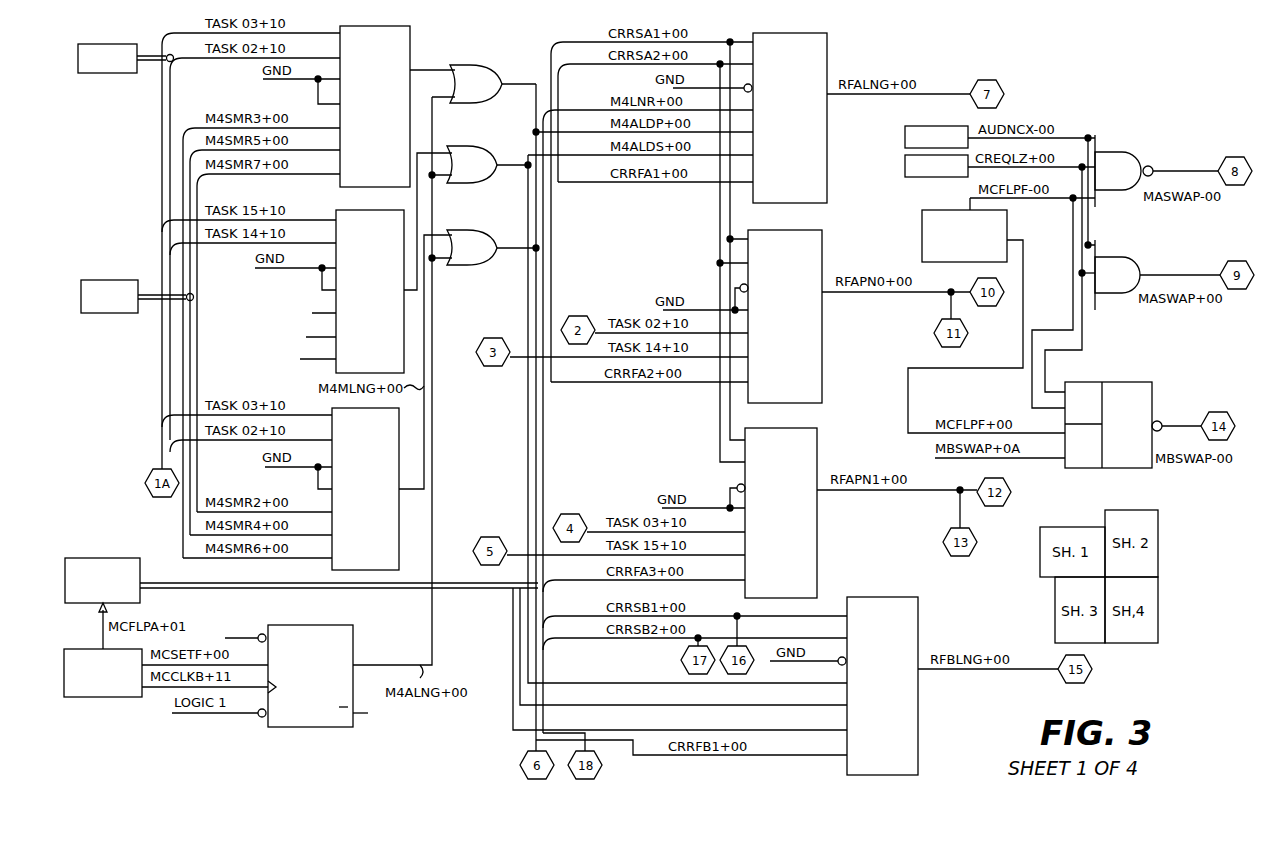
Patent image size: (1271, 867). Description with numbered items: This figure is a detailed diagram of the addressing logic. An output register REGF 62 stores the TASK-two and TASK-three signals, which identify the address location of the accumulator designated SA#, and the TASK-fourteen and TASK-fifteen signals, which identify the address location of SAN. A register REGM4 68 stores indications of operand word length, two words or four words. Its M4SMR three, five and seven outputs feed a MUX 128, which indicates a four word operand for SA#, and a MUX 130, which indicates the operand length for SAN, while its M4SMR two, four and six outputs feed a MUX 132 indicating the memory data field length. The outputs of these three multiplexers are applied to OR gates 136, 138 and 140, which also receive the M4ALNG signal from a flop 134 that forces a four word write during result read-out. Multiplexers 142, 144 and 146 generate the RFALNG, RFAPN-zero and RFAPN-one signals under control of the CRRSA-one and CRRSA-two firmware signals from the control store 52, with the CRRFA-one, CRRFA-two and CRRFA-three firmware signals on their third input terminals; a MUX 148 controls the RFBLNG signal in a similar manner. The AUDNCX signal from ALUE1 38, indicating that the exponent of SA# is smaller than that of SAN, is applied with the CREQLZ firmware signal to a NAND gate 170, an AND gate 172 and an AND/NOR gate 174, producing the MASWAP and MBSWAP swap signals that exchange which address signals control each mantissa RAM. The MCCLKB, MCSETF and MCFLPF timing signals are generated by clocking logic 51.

The output register REGF 62 is at (100, 73).
The register REGM4 68 is at (112, 313).
The MUX 128 is at (410, 42).
The MUX 130 is at (336, 370).
The MUX 132 is at (399, 515).
The flop 134 is at (300, 625).
The OR gate 136 is at (476, 65).
The OR gate 138 is at (462, 183).
The OR gate 140 is at (470, 230).
The MUX 142 is at (827, 50).
The MUX 144 is at (822, 250).
The MUX 146 is at (817, 462).
The MUX 148 is at (918, 727).
The NAND gate 170 is at (1128, 152).
The AND gate 172 is at (1128, 257).
The AND/NOR gate 174 is at (1158, 380).
The ALUE1 38 is at (905, 137).
The control store 52 is at (905, 168).
The clocking logic 51 is at (922, 222).